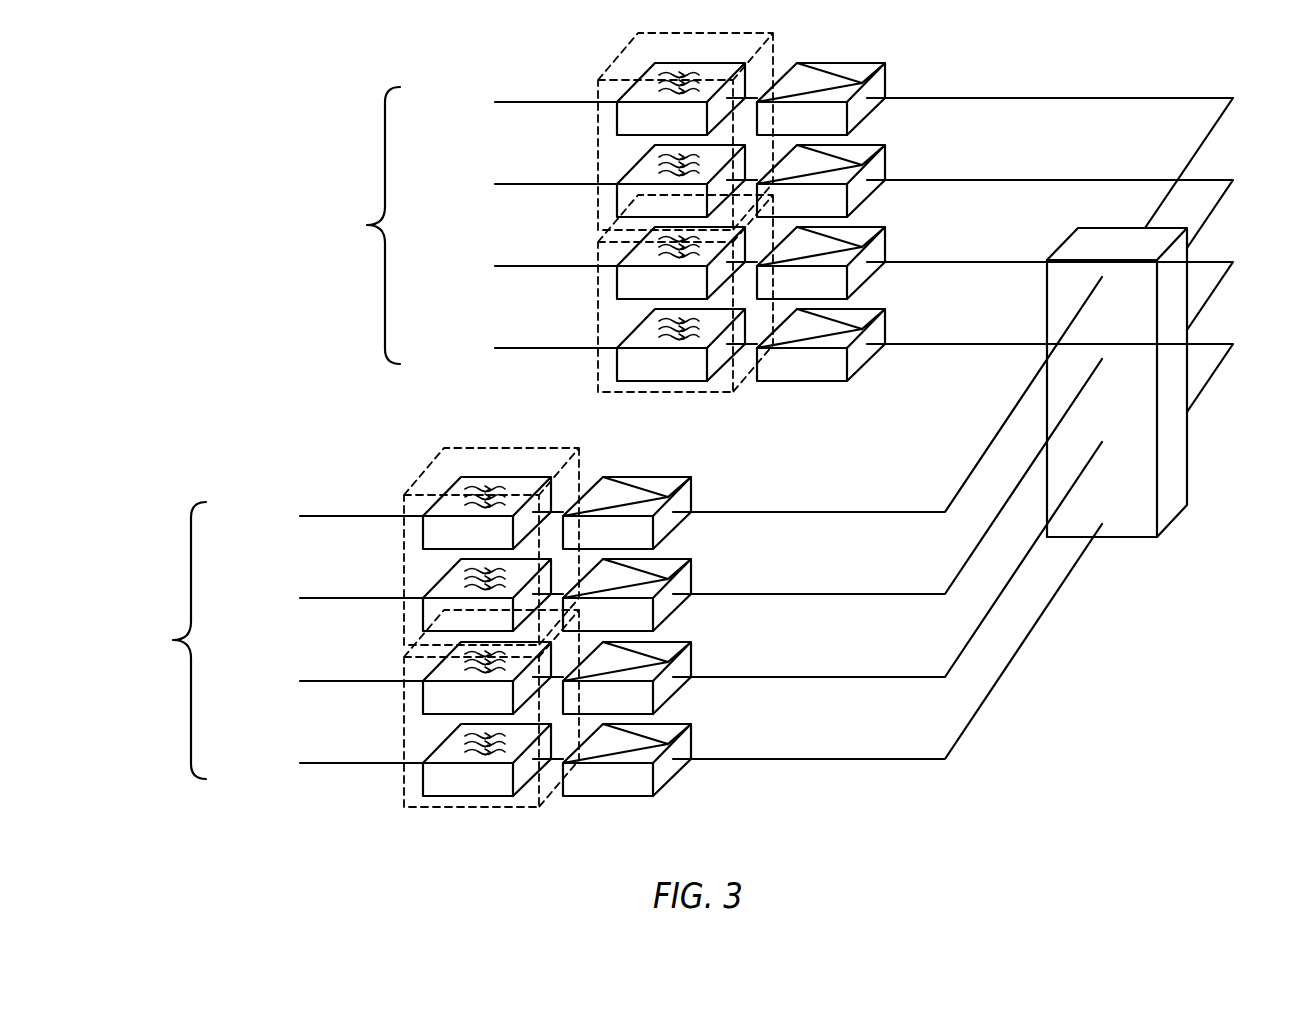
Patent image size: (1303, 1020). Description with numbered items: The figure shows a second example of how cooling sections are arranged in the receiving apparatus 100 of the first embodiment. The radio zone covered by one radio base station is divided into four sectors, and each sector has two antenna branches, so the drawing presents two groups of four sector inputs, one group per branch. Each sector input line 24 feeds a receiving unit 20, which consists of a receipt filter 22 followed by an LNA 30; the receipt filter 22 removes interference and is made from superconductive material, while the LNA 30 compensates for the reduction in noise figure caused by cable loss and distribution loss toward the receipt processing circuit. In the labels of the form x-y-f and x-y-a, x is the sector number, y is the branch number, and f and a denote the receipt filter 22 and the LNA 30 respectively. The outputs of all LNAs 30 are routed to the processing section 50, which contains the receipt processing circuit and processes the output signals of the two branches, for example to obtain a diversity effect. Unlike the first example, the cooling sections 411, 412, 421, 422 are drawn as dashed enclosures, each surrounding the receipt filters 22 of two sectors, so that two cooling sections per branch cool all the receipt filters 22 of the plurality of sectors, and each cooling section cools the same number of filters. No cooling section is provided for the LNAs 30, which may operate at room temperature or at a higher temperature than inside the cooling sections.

The receiving apparatus 100 is at (265, 154).
The sector input line 24 is at (544, 102).
The cooling section 411 is at (614, 62).
The cooling section 421 is at (598, 378).
The cooling section 412 is at (420, 477).
The cooling section 422 is at (404, 792).
The receipt filter 22 is at (681, 383).
The LNA 30 is at (803, 383).
The receiving unit 20 is at (784, 428).
The processing section 50 is at (1120, 240).